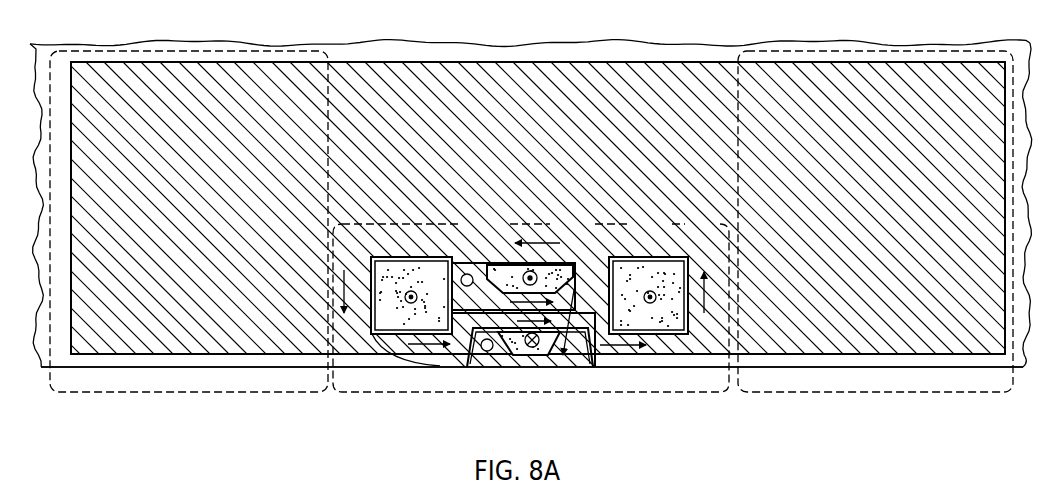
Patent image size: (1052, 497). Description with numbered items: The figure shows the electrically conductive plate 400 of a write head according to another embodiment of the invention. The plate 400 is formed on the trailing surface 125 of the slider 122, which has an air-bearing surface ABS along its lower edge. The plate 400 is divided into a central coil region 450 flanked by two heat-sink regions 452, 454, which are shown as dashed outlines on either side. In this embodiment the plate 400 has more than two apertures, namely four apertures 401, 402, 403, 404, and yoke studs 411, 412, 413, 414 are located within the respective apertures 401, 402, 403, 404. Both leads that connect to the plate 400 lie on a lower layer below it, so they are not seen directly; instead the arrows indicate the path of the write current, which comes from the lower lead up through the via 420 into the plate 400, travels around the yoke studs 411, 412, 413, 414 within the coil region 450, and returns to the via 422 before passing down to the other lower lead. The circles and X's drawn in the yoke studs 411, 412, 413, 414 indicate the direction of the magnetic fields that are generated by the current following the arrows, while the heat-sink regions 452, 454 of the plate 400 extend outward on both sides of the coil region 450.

The electrically conductive plate 400 is at (132, 62).
The trailing surface 125 is at (664, 56).
The slider 122 is at (830, 40).
The heat-sink region 452 is at (134, 393).
The coil region 450 is at (683, 393).
The heat-sink region 454 is at (783, 393).
The air-bearing surface ABS is at (875, 369).
The aperture 403 is at (372, 334).
The yoke stud 413 is at (391, 320).
The via 422 is at (487, 351).
The yoke stud 411 is at (530, 348).
The aperture 401 is at (556, 348).
The aperture 402 is at (644, 352).
The via 420 is at (468, 274).
The yoke stud 412 is at (553, 268).
The yoke stud 414 is at (630, 270).
The aperture 404 is at (729, 251).